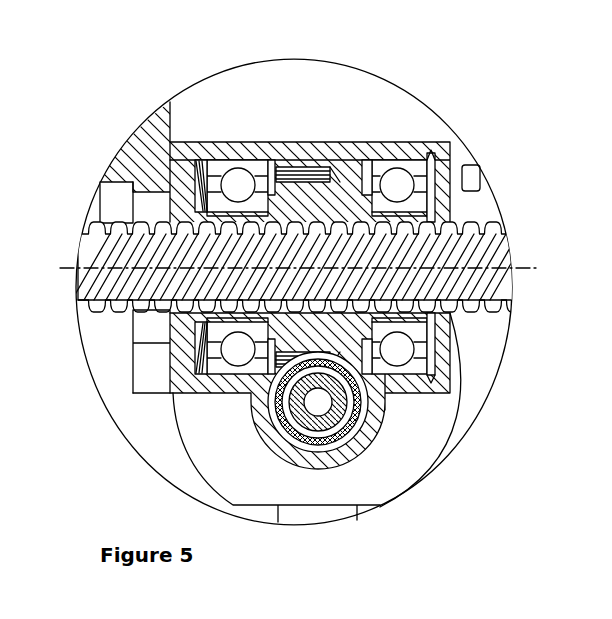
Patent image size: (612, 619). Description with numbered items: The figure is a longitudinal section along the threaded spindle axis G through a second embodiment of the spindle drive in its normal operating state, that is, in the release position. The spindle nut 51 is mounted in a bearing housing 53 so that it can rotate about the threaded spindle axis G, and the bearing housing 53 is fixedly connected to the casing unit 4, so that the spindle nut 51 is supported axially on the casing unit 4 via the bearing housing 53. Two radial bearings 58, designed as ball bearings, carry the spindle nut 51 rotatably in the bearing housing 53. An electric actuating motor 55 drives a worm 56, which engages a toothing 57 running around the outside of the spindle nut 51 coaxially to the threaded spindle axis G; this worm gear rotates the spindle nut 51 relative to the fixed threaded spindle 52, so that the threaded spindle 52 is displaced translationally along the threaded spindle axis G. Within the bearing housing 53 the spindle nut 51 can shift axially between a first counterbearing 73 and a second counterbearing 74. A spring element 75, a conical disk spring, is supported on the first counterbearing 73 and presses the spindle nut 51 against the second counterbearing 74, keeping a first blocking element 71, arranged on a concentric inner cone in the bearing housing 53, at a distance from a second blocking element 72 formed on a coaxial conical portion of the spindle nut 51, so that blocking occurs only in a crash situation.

The casing unit 4 is at (152, 378).
The spindle nut 51 is at (296, 192).
The threaded spindle 52 is at (487, 250).
The bearing housing 53 is at (427, 147).
The actuating motor 55 is at (418, 423).
The worm 56 is at (333, 382).
The toothing 57 is at (290, 405).
The radial bearings 58 is at (223, 168).
The first blocking element 71 is at (188, 214).
The second blocking element 72 is at (193, 212).
The first counterbearing 73 is at (195, 208).
The second counterbearing 74 is at (436, 170).
The spring element 75 is at (207, 162).
The threaded spindle axis G is at (535, 268).